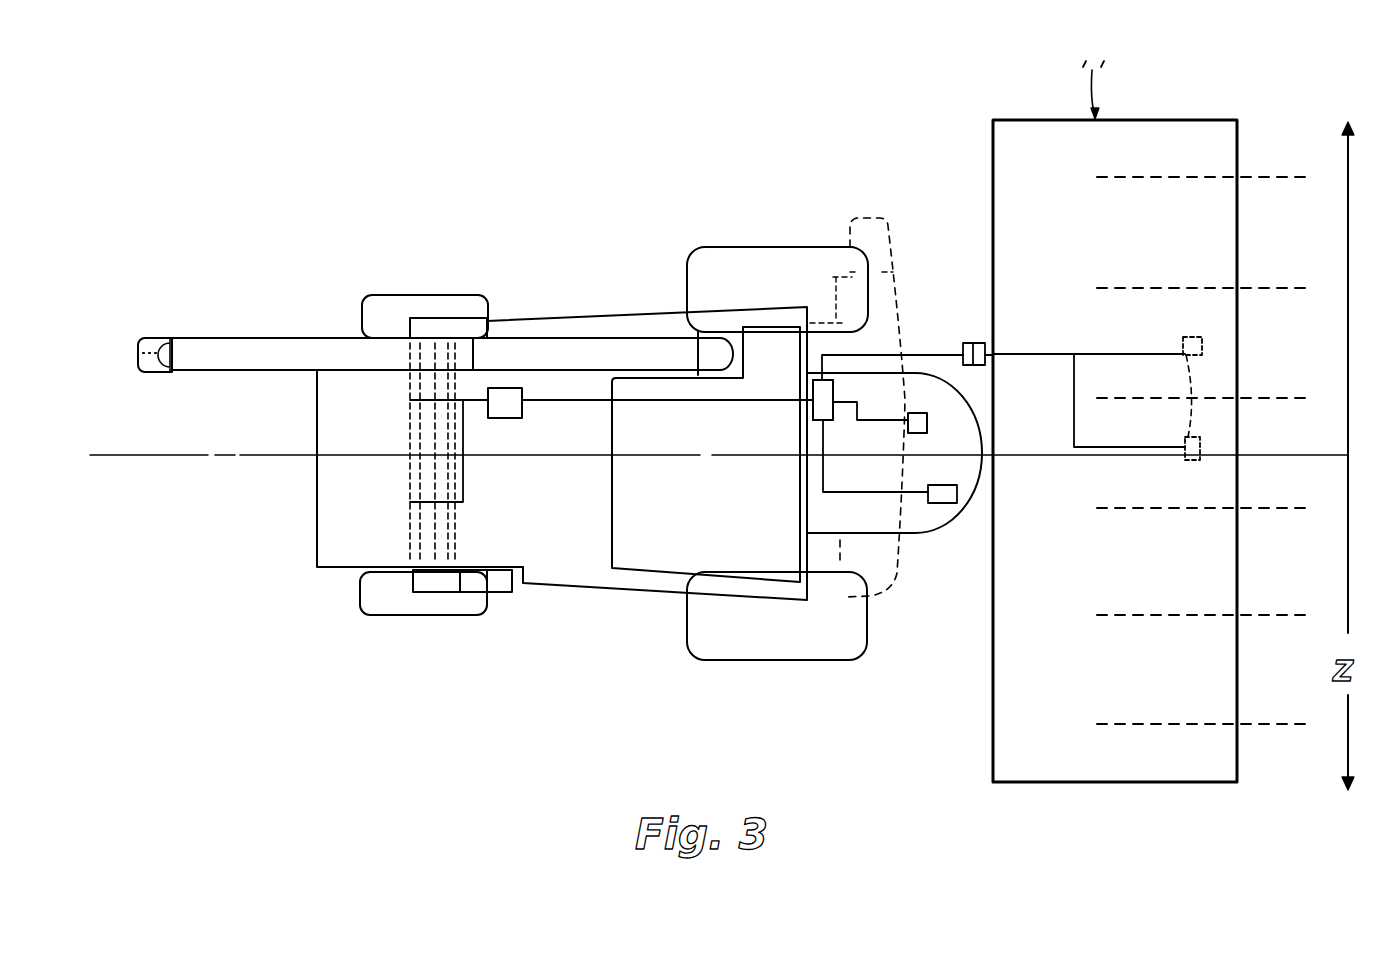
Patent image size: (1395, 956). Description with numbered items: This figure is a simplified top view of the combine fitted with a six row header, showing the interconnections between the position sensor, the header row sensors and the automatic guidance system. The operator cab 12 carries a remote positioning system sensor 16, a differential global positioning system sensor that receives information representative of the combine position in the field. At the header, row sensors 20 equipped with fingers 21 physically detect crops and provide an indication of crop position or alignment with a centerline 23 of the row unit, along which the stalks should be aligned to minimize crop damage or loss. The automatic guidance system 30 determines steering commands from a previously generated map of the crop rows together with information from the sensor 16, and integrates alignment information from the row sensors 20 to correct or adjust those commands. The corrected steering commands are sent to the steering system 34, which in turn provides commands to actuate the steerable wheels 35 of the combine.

The operator cab 12 is at (925, 517).
The remote positioning system sensor 16 is at (923, 425).
The row sensors 20 is at (1188, 340).
The fingers 21 is at (1185, 375).
The centerline 23 is at (1282, 397).
The automatic guidance system 30 is at (822, 408).
The steering system 34 is at (822, 408).
The steerable wheels 35 is at (427, 300).